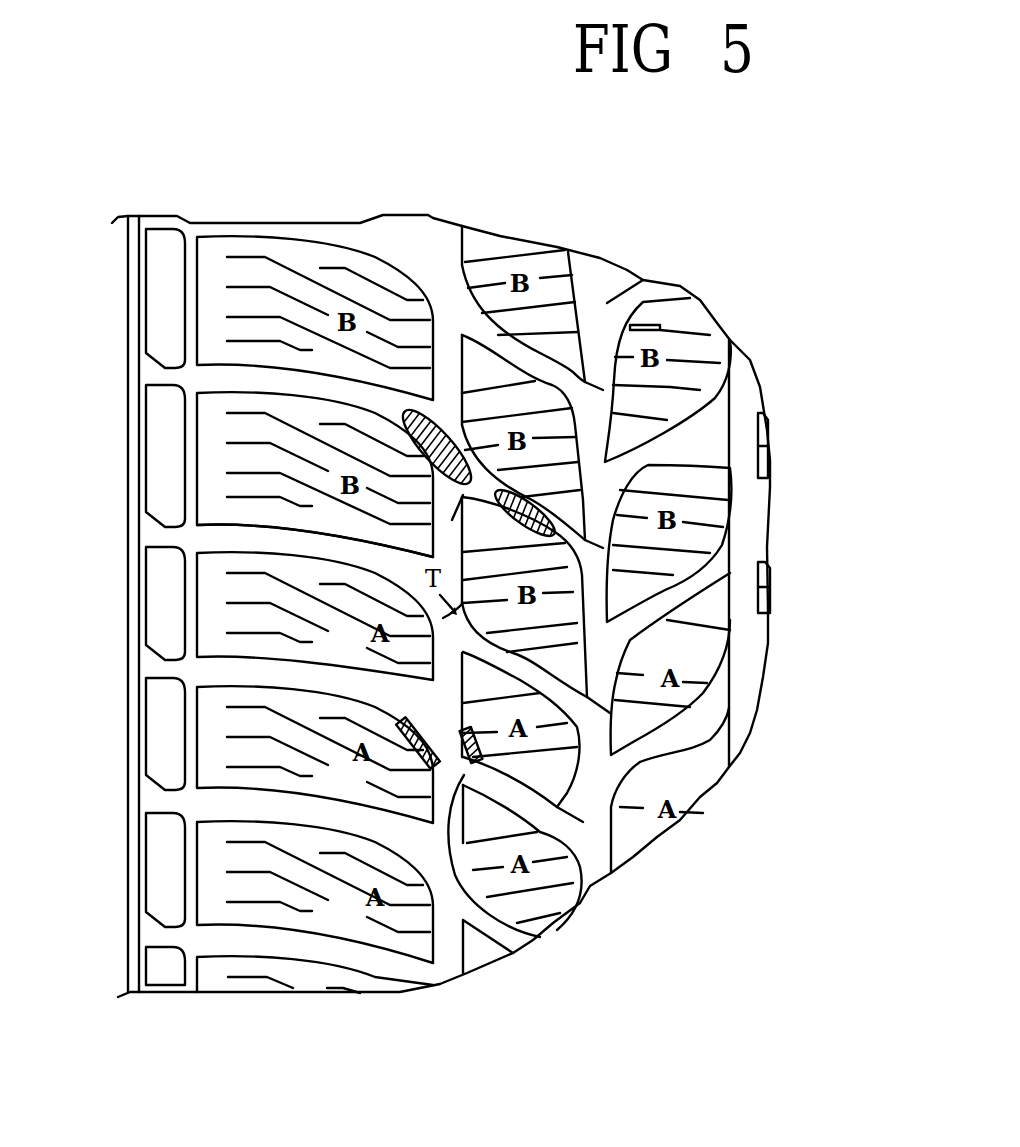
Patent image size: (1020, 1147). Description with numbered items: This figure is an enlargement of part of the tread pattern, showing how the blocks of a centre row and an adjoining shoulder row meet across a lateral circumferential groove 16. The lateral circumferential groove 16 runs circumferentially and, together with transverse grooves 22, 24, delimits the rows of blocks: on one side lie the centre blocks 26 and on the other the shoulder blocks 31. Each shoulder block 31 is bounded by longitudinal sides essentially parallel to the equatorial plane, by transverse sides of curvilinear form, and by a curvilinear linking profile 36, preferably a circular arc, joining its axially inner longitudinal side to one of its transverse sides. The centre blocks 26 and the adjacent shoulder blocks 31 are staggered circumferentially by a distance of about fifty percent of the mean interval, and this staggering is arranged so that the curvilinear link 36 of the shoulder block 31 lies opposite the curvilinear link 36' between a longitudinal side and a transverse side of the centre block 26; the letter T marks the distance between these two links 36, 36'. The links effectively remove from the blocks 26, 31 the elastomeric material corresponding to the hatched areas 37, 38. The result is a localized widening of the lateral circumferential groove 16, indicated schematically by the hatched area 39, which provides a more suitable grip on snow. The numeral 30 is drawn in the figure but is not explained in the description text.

The lateral circumferential groove 16 is at (452, 520).
The transverse groove 22 is at (583, 830).
The transverse groove 24 is at (433, 567).
The centre block 26 is at (587, 537).
The lateral groove 30 is at (522, 672).
The shoulder block 31 is at (437, 415).
The curvilinear linking profile 36 is at (242, 563).
The curvilinear link 36' is at (731, 610).
The hatched area 37 is at (440, 700).
The hatched area 38 is at (488, 912).
The hatched area of localized groove widening 39 is at (445, 405).